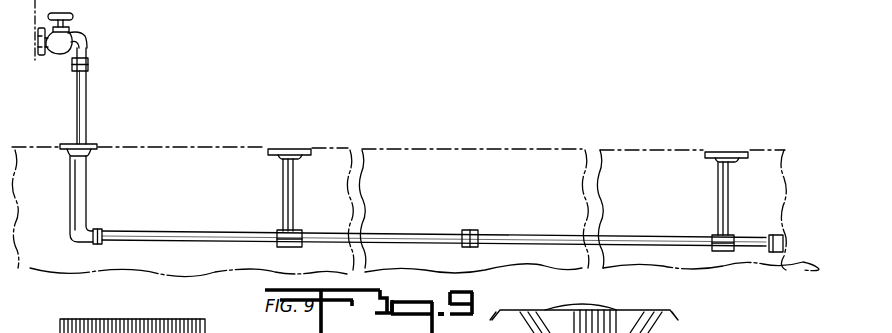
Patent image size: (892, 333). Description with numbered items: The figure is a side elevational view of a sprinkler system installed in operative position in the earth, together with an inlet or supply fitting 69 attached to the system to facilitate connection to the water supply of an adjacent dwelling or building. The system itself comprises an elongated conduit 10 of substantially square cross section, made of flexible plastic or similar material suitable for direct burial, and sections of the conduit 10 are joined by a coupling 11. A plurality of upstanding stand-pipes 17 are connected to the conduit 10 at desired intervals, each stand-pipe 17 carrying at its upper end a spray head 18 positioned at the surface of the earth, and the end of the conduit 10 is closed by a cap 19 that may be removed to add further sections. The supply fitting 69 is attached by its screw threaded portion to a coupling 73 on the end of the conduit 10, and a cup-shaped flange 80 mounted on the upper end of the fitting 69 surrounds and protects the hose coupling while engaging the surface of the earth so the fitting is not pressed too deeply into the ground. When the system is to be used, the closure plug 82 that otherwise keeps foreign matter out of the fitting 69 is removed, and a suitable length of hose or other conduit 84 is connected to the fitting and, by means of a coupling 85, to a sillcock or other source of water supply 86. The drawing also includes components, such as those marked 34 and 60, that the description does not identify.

The sillcock or other source of water supply 86 is at (87, 38).
The coupling 85 is at (88, 64).
The hose or other conduit 84 is at (86, 96).
The cup-shaped flange 80 is at (96, 146).
The inlet or supply fitting 69 is at (92, 192).
The coupling 73 is at (96, 246).
The elongated conduit 10 is at (219, 243).
The spray head 18 is at (311, 152).
The stand-pipe 17 is at (296, 189).
The tee fitting 34 is at (308, 228).
The coupling 11 is at (472, 248).
The cap 19 is at (768, 252).
The closure plug 82 is at (205, 329).
The plate member 60 is at (615, 311).